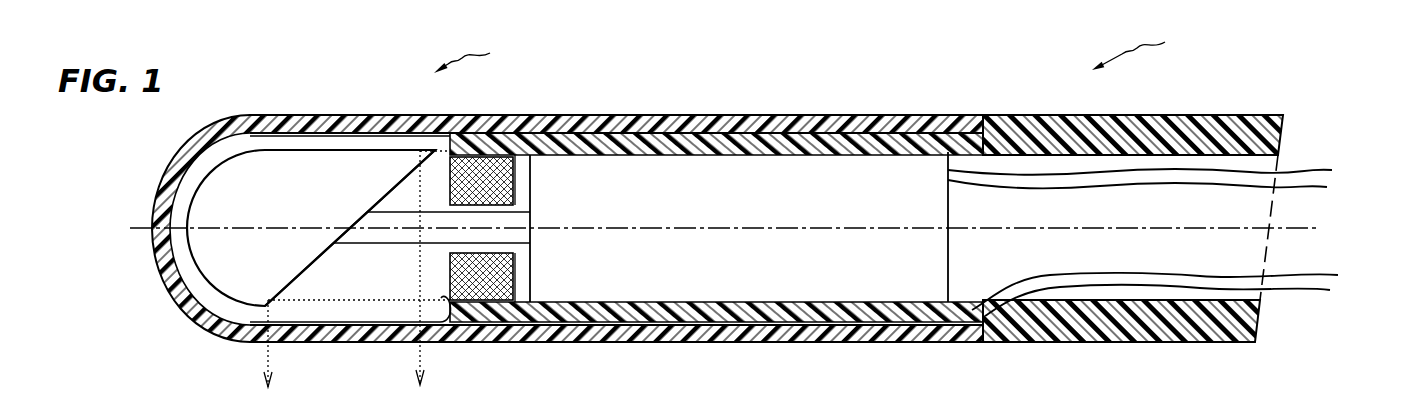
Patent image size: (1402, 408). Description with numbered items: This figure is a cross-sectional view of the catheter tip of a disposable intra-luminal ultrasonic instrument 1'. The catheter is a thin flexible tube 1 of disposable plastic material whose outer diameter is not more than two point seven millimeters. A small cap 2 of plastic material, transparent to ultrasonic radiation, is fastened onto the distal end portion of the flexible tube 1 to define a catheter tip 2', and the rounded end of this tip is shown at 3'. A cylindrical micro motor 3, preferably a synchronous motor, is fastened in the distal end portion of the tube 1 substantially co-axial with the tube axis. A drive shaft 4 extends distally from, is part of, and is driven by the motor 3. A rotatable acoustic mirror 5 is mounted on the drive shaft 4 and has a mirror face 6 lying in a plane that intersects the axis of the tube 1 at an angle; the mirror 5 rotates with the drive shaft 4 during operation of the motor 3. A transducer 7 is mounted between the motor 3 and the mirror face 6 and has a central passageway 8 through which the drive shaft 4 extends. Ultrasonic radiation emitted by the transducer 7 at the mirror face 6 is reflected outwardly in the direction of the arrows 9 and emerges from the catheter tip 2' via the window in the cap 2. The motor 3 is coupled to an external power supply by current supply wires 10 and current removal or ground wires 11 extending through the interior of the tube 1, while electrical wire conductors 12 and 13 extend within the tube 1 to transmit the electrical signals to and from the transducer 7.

The flexible tube 1 is at (1133, 199).
The disposable intra-luminal ultrasonic instrument 1' is at (1138, 47).
The cap 2 is at (616, 206).
The catheter tip 2' is at (471, 51).
The micro motor 3 is at (739, 227).
The rounded distal tip 3' is at (151, 228).
The drive shaft 4 is at (387, 237).
The rotatable acoustic mirror 5 is at (284, 208).
The mirror face 6 is at (315, 270).
The transducer 7 is at (493, 130).
The central passageway 8 is at (513, 207).
The arrows 9 is at (264, 352).
The current supply wires 10 is at (1320, 170).
The current removal wires 11 is at (1310, 190).
The electrical wire conductor 12 is at (1300, 275).
The electrical wire conductor 13 is at (1267, 290).